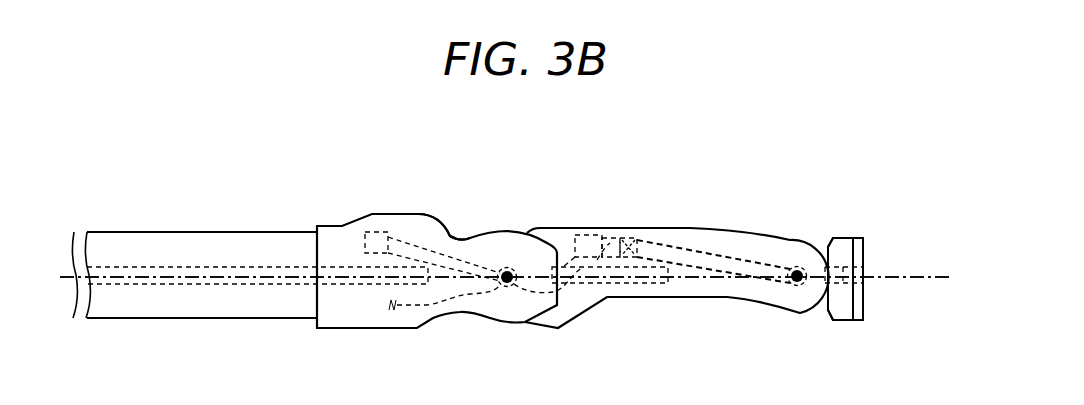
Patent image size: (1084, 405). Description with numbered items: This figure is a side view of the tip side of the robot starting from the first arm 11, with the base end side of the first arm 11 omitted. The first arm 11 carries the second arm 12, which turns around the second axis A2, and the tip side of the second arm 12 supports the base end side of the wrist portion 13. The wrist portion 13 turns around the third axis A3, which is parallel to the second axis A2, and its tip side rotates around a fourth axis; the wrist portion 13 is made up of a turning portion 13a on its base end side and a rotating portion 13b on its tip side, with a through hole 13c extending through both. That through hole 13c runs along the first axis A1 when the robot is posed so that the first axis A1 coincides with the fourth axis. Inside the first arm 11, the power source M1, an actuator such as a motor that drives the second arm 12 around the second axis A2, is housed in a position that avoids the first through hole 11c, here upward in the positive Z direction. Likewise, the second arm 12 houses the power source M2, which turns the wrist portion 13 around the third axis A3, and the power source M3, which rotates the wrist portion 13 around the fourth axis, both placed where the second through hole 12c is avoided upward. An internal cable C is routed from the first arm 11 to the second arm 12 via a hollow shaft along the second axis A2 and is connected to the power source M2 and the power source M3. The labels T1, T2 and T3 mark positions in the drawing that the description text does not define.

The first arm 11 is at (292, 182).
The first through hole 11c is at (160, 267).
The second arm 12 is at (537, 208).
The second through hole 12c is at (595, 299).
The wrist portion 13 is at (917, 160).
The turning portion 13a is at (840, 250).
The rotating portion 13b is at (858, 253).
The through hole 13c is at (838, 286).
The power source M1 is at (375, 232).
The power source M2 is at (588, 234).
The power source M3 is at (633, 238).
The first transmission T1 is at (450, 238).
The second transmission T2 is at (610, 238).
The third transmission T3 is at (700, 250).
The first axis A1 is at (222, 279).
The second axis A2 is at (503, 286).
The third axis A3 is at (795, 286).
The internal cable C is at (427, 307).